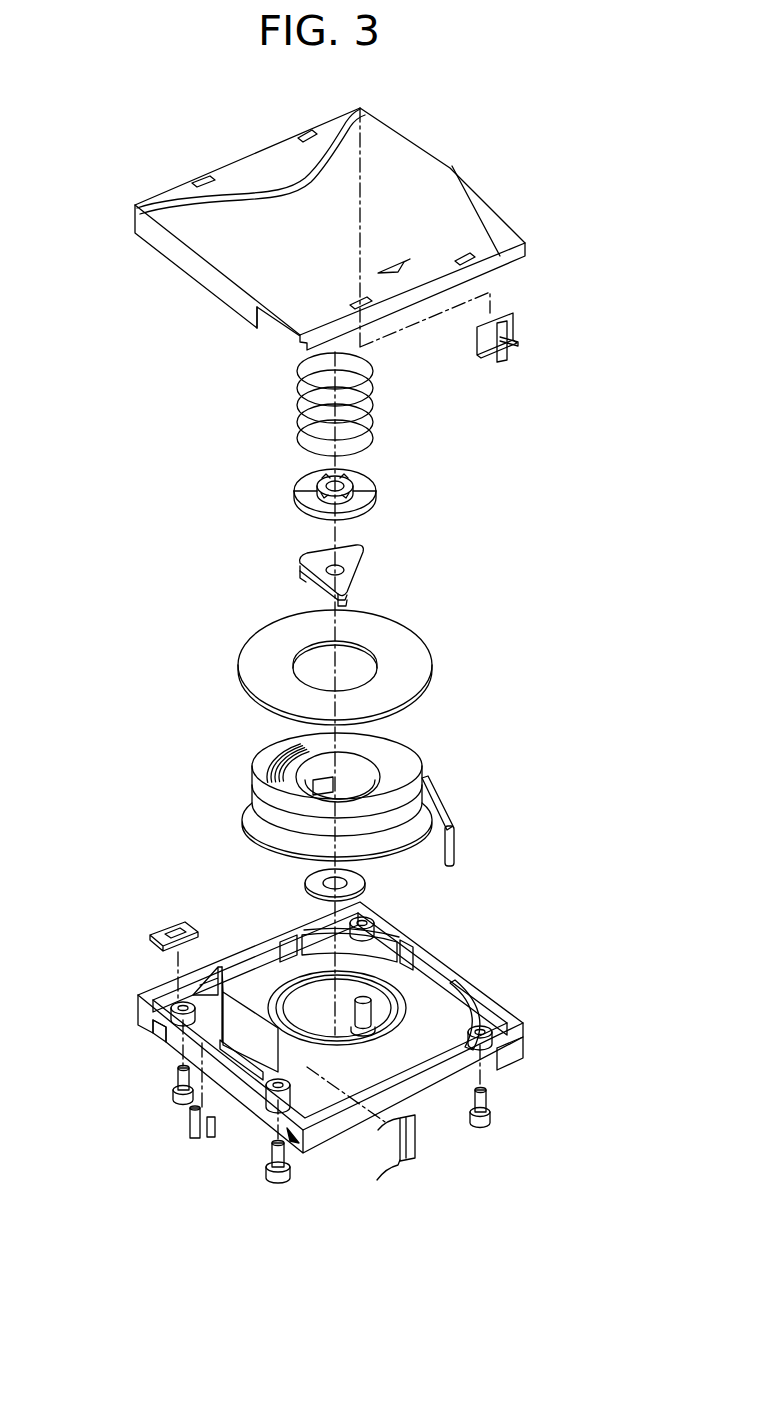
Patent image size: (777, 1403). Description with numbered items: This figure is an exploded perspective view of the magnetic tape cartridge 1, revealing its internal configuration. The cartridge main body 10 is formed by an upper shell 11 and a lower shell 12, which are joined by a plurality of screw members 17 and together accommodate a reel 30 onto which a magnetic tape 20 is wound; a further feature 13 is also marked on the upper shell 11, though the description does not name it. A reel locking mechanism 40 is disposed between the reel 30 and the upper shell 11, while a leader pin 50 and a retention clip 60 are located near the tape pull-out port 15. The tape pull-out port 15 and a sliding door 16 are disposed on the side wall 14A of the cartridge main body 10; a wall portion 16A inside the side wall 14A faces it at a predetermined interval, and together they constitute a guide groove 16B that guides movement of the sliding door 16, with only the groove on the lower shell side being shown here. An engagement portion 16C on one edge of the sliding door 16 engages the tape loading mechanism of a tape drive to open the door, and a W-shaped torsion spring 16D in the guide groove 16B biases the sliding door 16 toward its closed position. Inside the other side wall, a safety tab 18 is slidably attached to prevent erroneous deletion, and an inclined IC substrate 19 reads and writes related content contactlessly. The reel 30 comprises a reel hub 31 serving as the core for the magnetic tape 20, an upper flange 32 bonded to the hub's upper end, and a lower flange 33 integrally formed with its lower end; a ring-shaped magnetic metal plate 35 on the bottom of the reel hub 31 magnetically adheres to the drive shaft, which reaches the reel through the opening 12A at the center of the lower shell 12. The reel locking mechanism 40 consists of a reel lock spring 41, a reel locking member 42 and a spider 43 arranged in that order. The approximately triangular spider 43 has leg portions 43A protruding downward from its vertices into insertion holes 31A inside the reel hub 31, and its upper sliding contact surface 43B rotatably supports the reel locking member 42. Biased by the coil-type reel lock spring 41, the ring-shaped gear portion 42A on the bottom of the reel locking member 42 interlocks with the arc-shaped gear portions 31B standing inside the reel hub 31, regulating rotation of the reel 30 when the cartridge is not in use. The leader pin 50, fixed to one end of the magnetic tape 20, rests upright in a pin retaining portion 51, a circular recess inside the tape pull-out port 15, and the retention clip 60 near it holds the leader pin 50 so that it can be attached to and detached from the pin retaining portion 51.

The magnetic tape cartridge 1 is at (100, 152).
The cartridge main body 10 is at (308, 221).
The upper shell 11 is at (398, 150).
The lower shell 12 is at (329, 1062).
The opening 12A is at (395, 990).
The slot 13 is at (392, 262).
The side wall 14A is at (247, 1102).
The tape pull-out port 15 is at (259, 330).
The sliding door 16 is at (250, 1030).
The wall portion 16A is at (260, 1008).
The guide groove 16B is at (166, 1045).
The engagement portion 16C is at (505, 1060).
The torsion spring 16D is at (190, 1125).
The screw members 17 is at (176, 1086).
The safety tab 18 is at (518, 322).
The IC substrate 19 is at (152, 945).
The magnetic tape 20 is at (268, 762).
The reel 30 is at (315, 765).
The reel hub 31 is at (347, 752).
The insertion hole 31A is at (355, 790).
The gear portions 31B is at (280, 745).
The upper flange 32 is at (420, 658).
The lower flange 33 is at (300, 832).
The magnetic metal plate 35 is at (368, 884).
The reel locking mechanism 40 is at (354, 484).
The reel lock spring 41 is at (376, 400).
The reel locking member 42 is at (339, 485).
The gear portion 42A is at (378, 500).
The spider 43 is at (330, 580).
The leg portions 43A is at (300, 568).
The sliding contact surface 43B is at (345, 578).
The leader pin 50 is at (455, 842).
The pin retaining portion 51 is at (303, 1158).
The retention clip 60 is at (390, 1182).